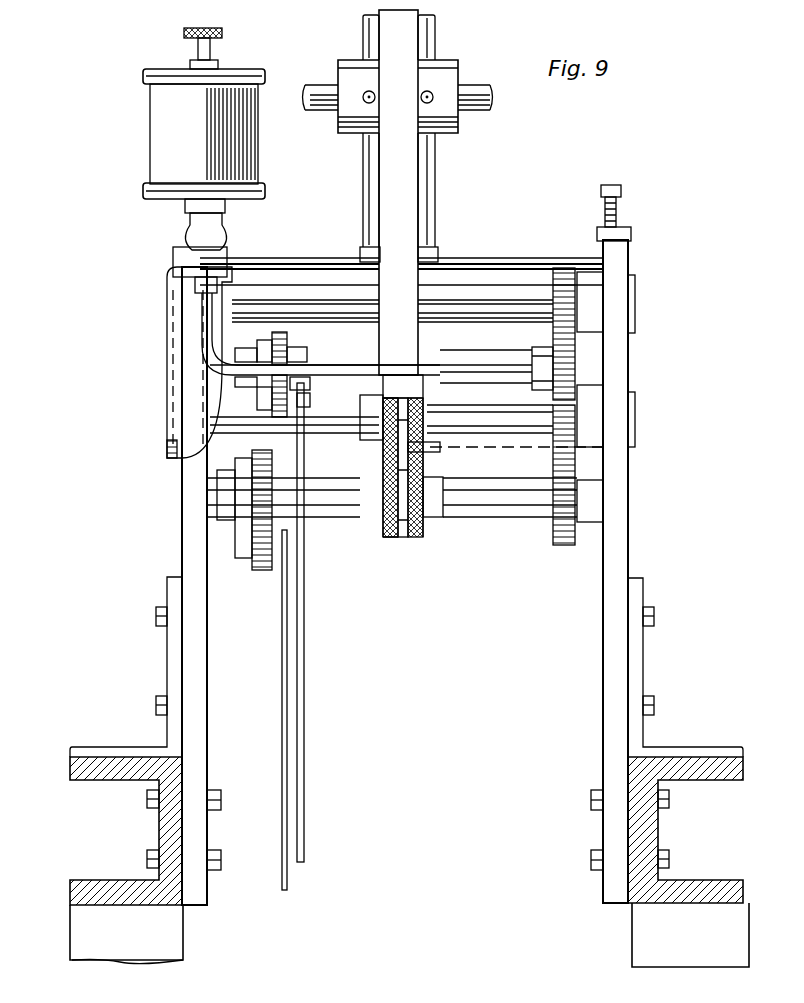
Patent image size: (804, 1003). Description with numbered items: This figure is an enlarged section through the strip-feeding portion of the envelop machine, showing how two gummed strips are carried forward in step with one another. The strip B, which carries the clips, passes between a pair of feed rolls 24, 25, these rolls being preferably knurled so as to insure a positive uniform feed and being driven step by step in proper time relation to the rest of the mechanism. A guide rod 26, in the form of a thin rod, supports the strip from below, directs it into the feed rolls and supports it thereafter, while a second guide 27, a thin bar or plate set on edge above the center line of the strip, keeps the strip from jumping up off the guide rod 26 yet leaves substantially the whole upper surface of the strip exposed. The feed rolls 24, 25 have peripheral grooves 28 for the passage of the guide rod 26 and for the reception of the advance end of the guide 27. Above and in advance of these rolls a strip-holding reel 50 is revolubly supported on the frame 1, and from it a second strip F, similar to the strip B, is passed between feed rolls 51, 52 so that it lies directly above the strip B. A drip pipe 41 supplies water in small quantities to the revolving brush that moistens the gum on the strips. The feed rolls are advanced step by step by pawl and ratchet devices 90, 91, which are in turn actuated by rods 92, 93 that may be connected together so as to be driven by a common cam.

The frame 1 is at (97, 760).
The strip F is at (405, 205).
The strip-holding reel 50 is at (435, 148).
The feed roll 51 is at (357, 253).
The feed roll 52 is at (413, 352).
The rod 92 is at (165, 160).
The ratchet device 91 is at (282, 342).
The drip pipe 41 is at (323, 372).
The guide 27 is at (387, 417).
The feed roll 25 is at (415, 537).
The peripheral groove 28 is at (400, 537).
The feed roll 24 is at (433, 435).
The strip B is at (385, 466).
The guide rod 26 is at (383, 512).
The pawl device 90 is at (250, 560).
The rod 93 is at (300, 637).